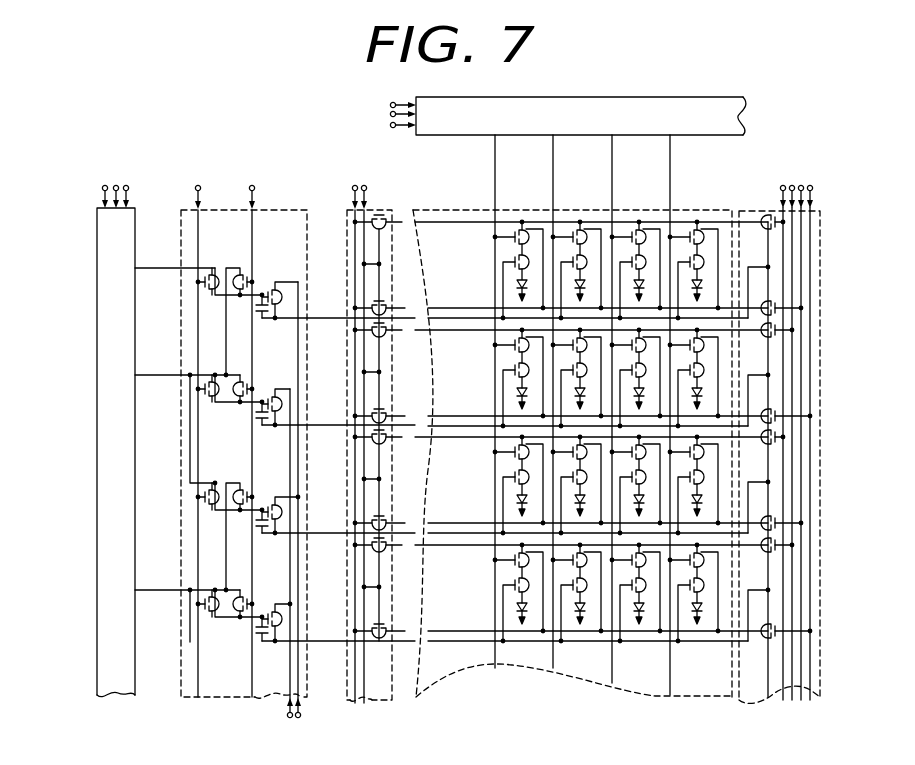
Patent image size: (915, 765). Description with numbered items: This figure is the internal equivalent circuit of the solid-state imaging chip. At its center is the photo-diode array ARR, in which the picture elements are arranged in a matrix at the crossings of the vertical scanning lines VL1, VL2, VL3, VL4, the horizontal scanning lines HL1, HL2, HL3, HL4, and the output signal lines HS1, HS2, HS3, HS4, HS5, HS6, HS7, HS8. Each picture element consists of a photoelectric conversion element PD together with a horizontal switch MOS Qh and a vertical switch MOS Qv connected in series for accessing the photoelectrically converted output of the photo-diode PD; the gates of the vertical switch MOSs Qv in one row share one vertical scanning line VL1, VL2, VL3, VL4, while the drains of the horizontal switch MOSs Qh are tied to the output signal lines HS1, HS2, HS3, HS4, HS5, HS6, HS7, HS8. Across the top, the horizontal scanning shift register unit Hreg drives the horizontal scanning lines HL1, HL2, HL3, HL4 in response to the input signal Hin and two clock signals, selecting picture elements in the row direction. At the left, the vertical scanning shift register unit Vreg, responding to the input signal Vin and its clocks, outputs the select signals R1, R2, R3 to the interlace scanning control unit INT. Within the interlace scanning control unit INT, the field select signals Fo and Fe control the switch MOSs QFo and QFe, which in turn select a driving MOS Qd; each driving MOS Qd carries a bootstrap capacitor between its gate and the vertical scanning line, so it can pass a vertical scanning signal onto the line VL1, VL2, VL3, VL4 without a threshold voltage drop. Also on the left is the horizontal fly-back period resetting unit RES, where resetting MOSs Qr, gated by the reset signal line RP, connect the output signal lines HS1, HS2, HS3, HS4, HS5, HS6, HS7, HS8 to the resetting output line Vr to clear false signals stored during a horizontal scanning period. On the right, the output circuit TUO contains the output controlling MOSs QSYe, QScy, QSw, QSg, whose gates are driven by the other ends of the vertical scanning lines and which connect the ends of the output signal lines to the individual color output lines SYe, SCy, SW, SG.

The vertical scanning shift register unit Vreg is at (108, 700).
The input signal Vin is at (128, 186).
The interlace scanning control unit INT is at (280, 209).
The field select signal Fo is at (198, 186).
The field select signal Fe is at (252, 186).
The select signal R1 is at (175, 258).
The select signal R2 is at (187, 366).
The select signal R3 is at (187, 581).
The switch MOS QFo is at (212, 266).
The switch MOS QFe is at (238, 314).
The driving MOS Qd is at (277, 292).
The vertical scanning line VL1 is at (340, 320).
The vertical scanning line VL2 is at (340, 428).
The vertical scanning line VL3 is at (340, 535).
The vertical scanning line VL4 is at (340, 643).
The horizontal fly-back period resetting unit RES is at (388, 210).
The resetting output line Vr is at (344, 435).
The reset signal line RP is at (365, 432).
The output signal line HS1 is at (402, 229).
The output signal line HS2 is at (404, 316).
The output signal line HS3 is at (402, 334).
The output signal line HS4 is at (404, 424).
The output signal line HS5 is at (402, 441).
The output signal line HS6 is at (404, 532).
The output signal line HS7 is at (404, 549).
The output signal line HS8 is at (404, 640).
The resetting MOS Qr is at (388, 340).
The horizontal scanning shift register unit Hreg is at (748, 115).
The input signal Hin is at (390, 125).
The horizontal scanning line HL1 is at (476, 401).
The horizontal scanning line HL2 is at (534, 401).
The horizontal scanning line HL3 is at (593, 409).
The horizontal scanning line HL4 is at (651, 415).
The photo-diode array ARR is at (597, 210).
The horizontal switch MOS Qh is at (515, 237).
The vertical switch MOS Qv is at (512, 262).
The photoelectric conversion element PD is at (516, 286).
The output circuit TUO is at (822, 479).
The output line SYe is at (781, 188).
The output line SW is at (792, 186).
The output line SCy is at (802, 186).
The output line SG is at (812, 188).
The output controlling MOS QSYe is at (776, 230).
The output controlling MOS QScy is at (776, 304).
The output controlling MOS QSw is at (776, 336).
The output controlling MOS QSg is at (776, 420).